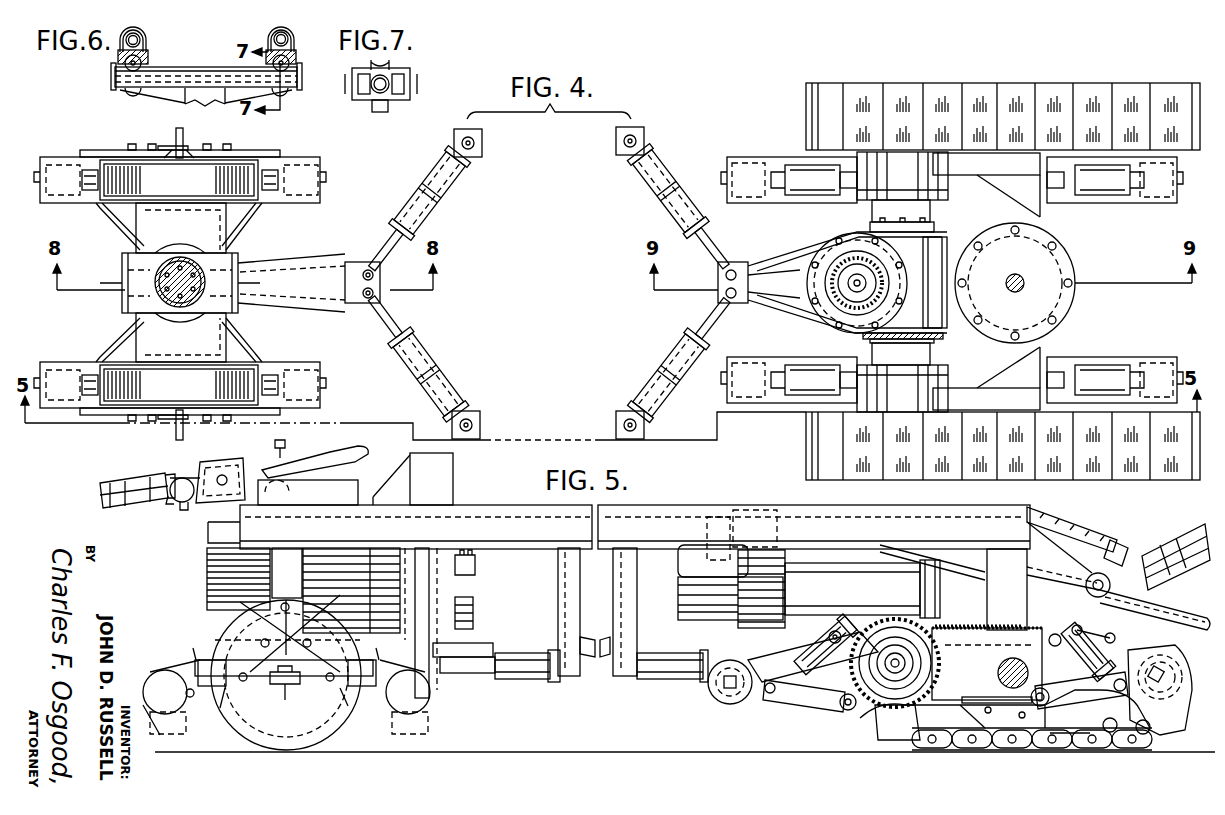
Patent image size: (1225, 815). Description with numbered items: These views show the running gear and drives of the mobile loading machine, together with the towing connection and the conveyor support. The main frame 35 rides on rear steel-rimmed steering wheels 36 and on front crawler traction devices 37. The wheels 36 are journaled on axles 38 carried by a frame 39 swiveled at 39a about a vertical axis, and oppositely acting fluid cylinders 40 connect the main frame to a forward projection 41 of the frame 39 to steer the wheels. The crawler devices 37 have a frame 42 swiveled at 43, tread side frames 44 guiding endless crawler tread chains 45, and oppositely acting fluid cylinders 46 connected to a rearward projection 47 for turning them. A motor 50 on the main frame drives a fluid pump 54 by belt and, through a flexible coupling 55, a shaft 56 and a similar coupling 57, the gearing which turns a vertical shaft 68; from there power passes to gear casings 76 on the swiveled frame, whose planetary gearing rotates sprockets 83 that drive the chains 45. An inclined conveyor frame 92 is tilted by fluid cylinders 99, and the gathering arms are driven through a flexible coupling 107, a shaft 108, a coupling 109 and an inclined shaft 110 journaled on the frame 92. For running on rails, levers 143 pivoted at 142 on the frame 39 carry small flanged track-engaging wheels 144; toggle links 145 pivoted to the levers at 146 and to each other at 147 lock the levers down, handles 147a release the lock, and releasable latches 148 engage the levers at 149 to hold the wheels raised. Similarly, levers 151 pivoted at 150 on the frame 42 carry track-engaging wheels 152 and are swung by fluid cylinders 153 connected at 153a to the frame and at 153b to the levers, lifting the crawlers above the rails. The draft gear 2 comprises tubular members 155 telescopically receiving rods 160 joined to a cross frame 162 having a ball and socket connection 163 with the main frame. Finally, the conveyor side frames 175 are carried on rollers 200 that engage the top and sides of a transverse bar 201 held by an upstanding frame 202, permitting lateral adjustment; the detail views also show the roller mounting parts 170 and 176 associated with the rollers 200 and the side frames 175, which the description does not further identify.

In FIG. 5, the extensible draft gear 2 is at (134, 503).
In FIG. 5, the main frame 35 is at (676, 512).
In FIG. 4, the steering wheels 36 is at (122, 170).
In FIG. 5, the steering wheels 36 is at (288, 750).
In FIG. 4, the crawler traction devices 37 is at (1097, 83).
In FIG. 5, the crawler traction devices 37 is at (843, 738).
In FIG. 5, the axles 38 is at (287, 688).
In FIG. 4, the frame 39 is at (215, 222).
In FIG. 5, the frame 39 is at (222, 664).
In FIG. 4, the swivel 39a is at (160, 268).
In FIG. 4, the fluid cylinders 40 is at (432, 204).
In FIG. 5, the fluid cylinders 40 is at (525, 655).
In FIG. 4, the forward projection 41 is at (310, 262).
In FIG. 5, the forward projection 41 is at (452, 674).
In FIG. 4, the frame 42 is at (950, 250).
In FIG. 5, the frame 42 is at (997, 706).
In FIG. 4, the swivel 43 is at (1066, 276).
In FIG. 5, the tread side frames 44 is at (1022, 720).
In FIG. 5, the crawler tread chains 45 is at (1068, 746).
In FIG. 4, the fluid cylinders 46 is at (655, 198).
In FIG. 5, the fluid cylinders 46 is at (658, 655).
In FIG. 4, the rearward projection 47 is at (787, 256).
In FIG. 5, the rearward projection 47 is at (768, 660).
In FIG. 5, the motor 50 is at (352, 570).
In FIG. 5, the fluid pump 54 is at (474, 609).
In FIG. 5, the flexible coupling 55 is at (478, 568).
In FIG. 5, the shaft 56 is at (664, 553).
In FIG. 5, the flexible coupling 57 is at (742, 515).
In FIG. 4, the vertical shaft 68 is at (852, 283).
In FIG. 4, the gear casings 76 is at (880, 180).
In FIG. 5, the gear casings 76 is at (915, 735).
In FIG. 5, the sprockets 83 is at (886, 735).
In FIG. 5, the inclined conveyor frame 92 is at (1084, 533).
In FIG. 5, the fluid cylinders 99 is at (1175, 540).
In FIG. 5, the flexible coupling 107 is at (855, 560).
In FIG. 5, the shaft 108 is at (944, 556).
In FIG. 5, the flexible coupling 109 is at (1080, 580).
In FIG. 5, the shaft 110 is at (1150, 601).
In FIG. 5, the pivots 142 is at (245, 683).
In FIG. 4, the levers 143 is at (95, 152).
In FIG. 5, the levers 143 is at (236, 706).
In FIG. 4, the track-engaging wheels 144 is at (56, 172).
In FIG. 5, the track-engaging wheels 144 is at (158, 740).
In FIG. 4, the toggle links 145 is at (184, 160).
In FIG. 5, the toggle links 145 is at (292, 617).
In FIG. 5, the pivots 146 is at (210, 612).
In FIG. 5, the pivot 147 is at (285, 603).
In FIG. 4, the handles 147a is at (172, 452).
In FIG. 4, the releasable latches 148 is at (276, 180).
In FIG. 5, the releasable latches 148 is at (205, 662).
In FIG. 5, the latch engagement 149 is at (188, 690).
In FIG. 5, the pivots 150 is at (842, 712).
In FIG. 4, the levers 151 is at (758, 202).
In FIG. 5, the levers 151 is at (805, 694).
In FIG. 4, the track-engaging wheels 152 is at (1160, 200).
In FIG. 5, the track-engaging wheels 152 is at (712, 690).
In FIG. 4, the fluid cylinders 153 is at (812, 178).
In FIG. 5, the fluid cylinders 153 is at (810, 658).
In FIG. 5, the cylinder pivot 153a is at (838, 631).
In FIG. 5, the cylinder pivot 153b is at (1135, 710).
In FIG. 5, the tubular members 155 is at (118, 483).
In FIG. 5, the rods 160 is at (215, 470).
In FIG. 5, the cross frame 162 is at (206, 506).
In FIG. 5, the ball and socket connection 163 is at (292, 471).
In FIG. 6, the roller arch 170 is at (141, 31).
In FIG. 6, the side frames 175 is at (118, 58).
In FIG. 7, the side frames 175 is at (404, 98).
In FIG. 6, the roller 176 is at (141, 40).
In FIG. 6, the rollers 200 is at (142, 63).
In FIG. 7, the rollers 200 is at (395, 74).
In FIG. 6, the transverse bar 201 is at (207, 68).
In FIG. 7, the transverse bar 201 is at (374, 90).
In FIG. 6, the upstanding frame 202 is at (192, 96).
In FIG. 7, the upstanding frame 202 is at (380, 112).